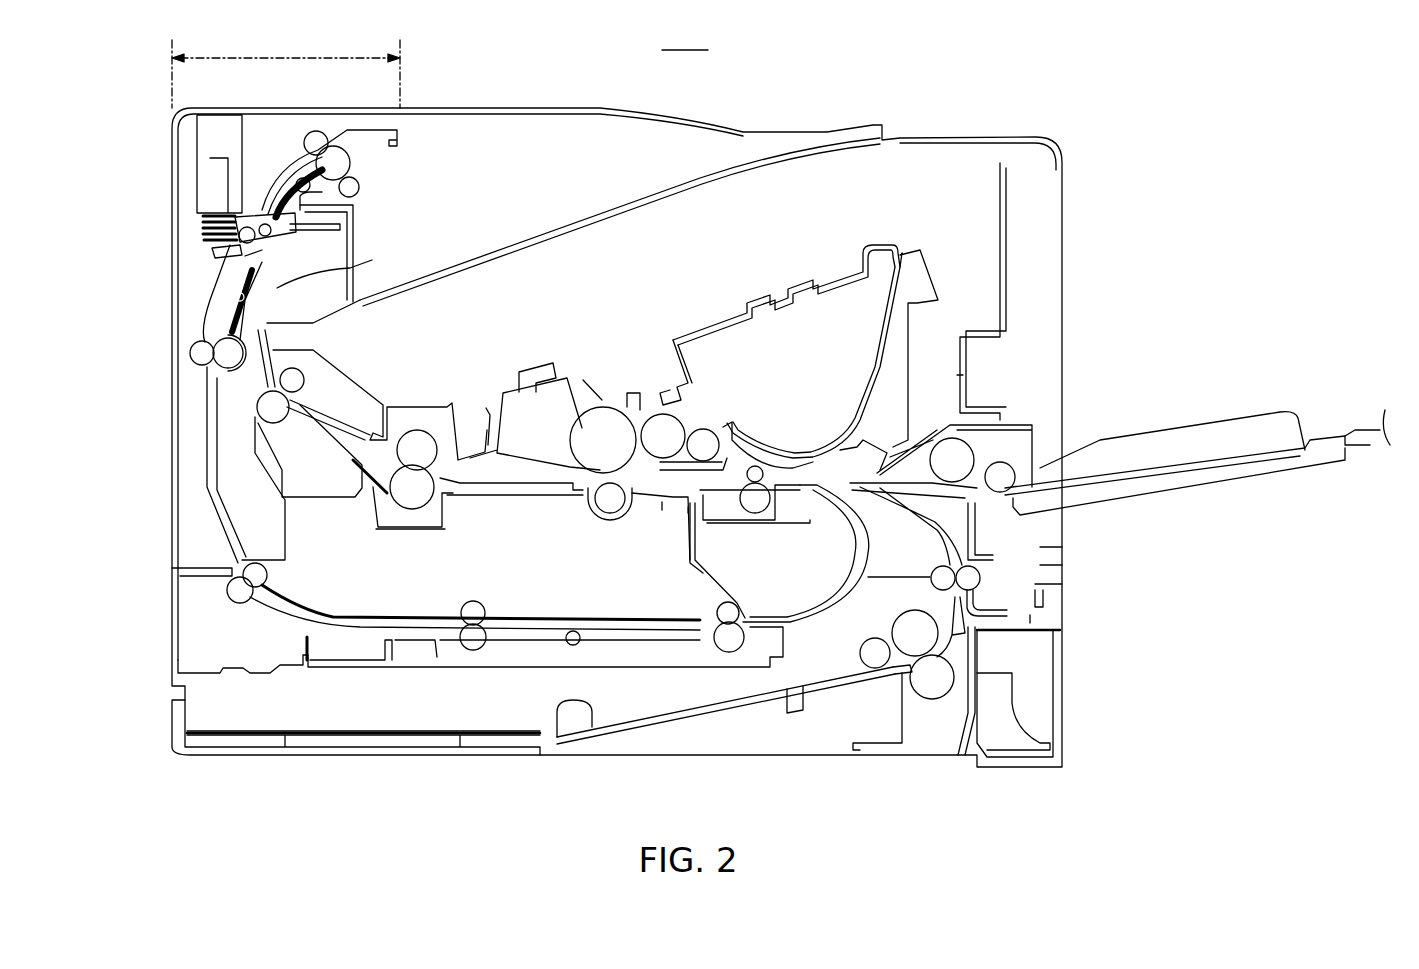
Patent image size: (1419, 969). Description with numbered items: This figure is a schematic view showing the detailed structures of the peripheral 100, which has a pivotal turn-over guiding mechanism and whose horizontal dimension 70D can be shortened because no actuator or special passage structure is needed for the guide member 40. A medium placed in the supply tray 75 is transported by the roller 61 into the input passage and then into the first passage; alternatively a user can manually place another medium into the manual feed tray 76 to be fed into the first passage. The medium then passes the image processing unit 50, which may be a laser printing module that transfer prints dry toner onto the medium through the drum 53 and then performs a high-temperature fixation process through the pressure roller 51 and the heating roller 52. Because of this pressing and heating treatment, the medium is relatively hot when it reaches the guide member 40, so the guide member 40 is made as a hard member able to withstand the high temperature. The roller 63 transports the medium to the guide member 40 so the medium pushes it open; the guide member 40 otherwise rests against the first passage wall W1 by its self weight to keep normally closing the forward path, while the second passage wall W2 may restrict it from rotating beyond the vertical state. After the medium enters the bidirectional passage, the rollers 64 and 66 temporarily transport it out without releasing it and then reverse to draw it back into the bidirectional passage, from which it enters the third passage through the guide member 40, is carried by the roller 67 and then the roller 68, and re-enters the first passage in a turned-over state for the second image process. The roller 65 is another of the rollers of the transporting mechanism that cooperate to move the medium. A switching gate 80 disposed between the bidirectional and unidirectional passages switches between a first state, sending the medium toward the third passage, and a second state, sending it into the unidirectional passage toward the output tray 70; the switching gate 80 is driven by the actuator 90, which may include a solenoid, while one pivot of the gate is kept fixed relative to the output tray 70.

The peripheral 100 is at (617, 396).
The horizontal dimension 70D is at (286, 67).
The output tray 70 is at (510, 245).
The actuator 90 is at (222, 131).
The switching gate 80 is at (278, 210).
The roller 66 is at (316, 138).
The roller 64 is at (335, 163).
The roller 65 is at (350, 187).
The guide member 40 is at (293, 253).
The first passage wall W1 is at (372, 258).
The second passage wall W2 is at (245, 256).
The roller 67 is at (232, 372).
The roller 63 is at (272, 400).
The pressure roller 51 is at (420, 442).
The heating roller 52 is at (408, 500).
The drum 53 is at (608, 430).
The image processing unit 50 is at (602, 353).
The roller 68 is at (718, 630).
The roller 61 is at (917, 633).
The supply tray 75 is at (745, 700).
The manual feed tray 76 is at (1255, 472).